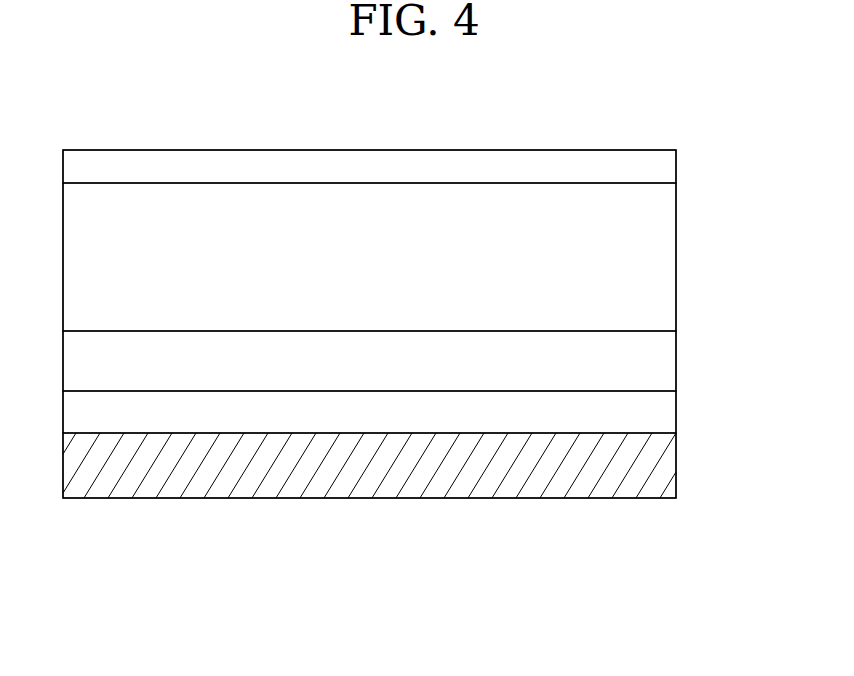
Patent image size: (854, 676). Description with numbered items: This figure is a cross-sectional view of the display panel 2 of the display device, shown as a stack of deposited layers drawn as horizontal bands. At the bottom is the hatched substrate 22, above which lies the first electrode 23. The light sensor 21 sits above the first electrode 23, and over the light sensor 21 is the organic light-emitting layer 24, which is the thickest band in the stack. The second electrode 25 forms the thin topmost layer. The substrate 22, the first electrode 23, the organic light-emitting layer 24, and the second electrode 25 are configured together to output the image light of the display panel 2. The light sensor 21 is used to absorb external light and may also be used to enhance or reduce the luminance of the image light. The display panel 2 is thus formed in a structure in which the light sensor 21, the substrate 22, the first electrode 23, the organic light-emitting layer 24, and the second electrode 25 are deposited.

The display panel 2 is at (62, 122).
The second electrode 25 is at (663, 169).
The organic light-emitting layer 24 is at (663, 259).
The light sensor 21 is at (663, 363).
The first electrode 23 is at (663, 416).
The substrate 22 is at (663, 469).